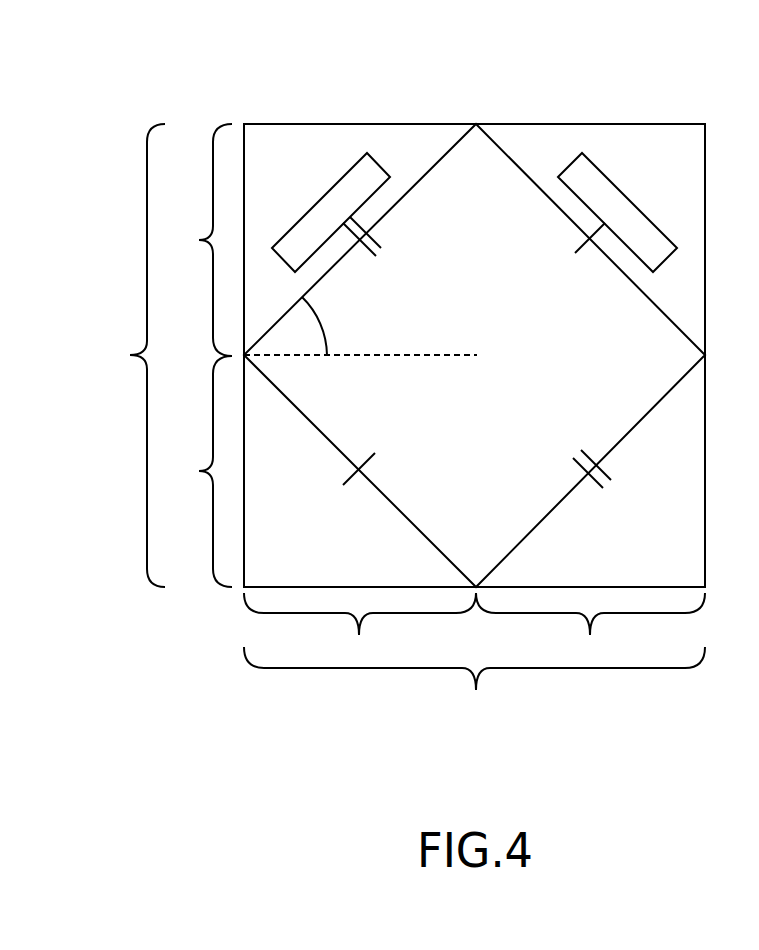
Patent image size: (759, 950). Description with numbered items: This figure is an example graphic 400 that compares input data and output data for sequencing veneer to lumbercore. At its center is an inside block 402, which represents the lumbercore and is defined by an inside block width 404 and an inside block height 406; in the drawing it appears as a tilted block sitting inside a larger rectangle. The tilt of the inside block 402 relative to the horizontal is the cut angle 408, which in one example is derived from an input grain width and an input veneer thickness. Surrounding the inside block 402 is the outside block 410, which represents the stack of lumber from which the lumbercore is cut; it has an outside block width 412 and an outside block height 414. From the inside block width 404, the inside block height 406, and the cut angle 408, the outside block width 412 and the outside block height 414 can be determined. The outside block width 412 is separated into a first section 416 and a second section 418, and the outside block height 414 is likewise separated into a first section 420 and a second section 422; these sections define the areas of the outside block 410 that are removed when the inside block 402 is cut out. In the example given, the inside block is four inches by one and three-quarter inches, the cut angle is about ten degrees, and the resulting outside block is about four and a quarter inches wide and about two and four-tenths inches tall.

The graphic 400 is at (218, 60).
The inside block 402 is at (627, 437).
The inside block width 404 is at (331, 212).
The inside block height 406 is at (617, 212).
The cut angle 408 is at (322, 322).
The outside block 410 is at (622, 125).
The outside block width 412 is at (474, 682).
The outside block height 414 is at (125, 355).
The first section 416 is at (360, 627).
The second section 418 is at (590, 627).
The first section 420 is at (193, 240).
The second section 422 is at (193, 471).